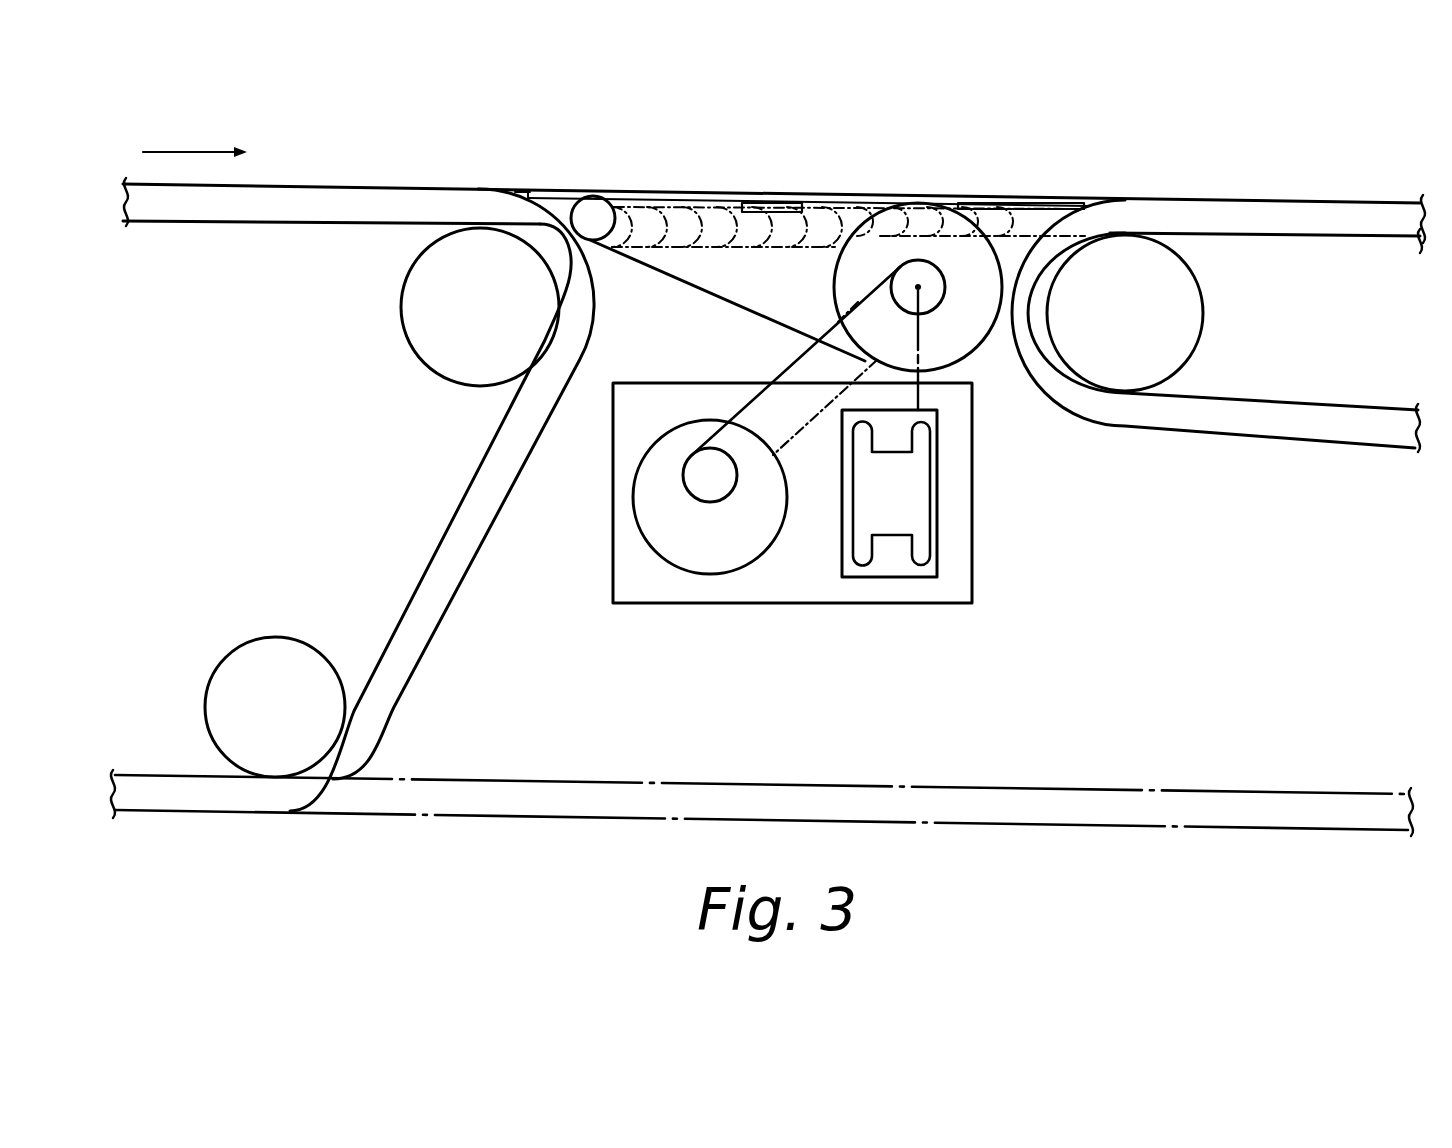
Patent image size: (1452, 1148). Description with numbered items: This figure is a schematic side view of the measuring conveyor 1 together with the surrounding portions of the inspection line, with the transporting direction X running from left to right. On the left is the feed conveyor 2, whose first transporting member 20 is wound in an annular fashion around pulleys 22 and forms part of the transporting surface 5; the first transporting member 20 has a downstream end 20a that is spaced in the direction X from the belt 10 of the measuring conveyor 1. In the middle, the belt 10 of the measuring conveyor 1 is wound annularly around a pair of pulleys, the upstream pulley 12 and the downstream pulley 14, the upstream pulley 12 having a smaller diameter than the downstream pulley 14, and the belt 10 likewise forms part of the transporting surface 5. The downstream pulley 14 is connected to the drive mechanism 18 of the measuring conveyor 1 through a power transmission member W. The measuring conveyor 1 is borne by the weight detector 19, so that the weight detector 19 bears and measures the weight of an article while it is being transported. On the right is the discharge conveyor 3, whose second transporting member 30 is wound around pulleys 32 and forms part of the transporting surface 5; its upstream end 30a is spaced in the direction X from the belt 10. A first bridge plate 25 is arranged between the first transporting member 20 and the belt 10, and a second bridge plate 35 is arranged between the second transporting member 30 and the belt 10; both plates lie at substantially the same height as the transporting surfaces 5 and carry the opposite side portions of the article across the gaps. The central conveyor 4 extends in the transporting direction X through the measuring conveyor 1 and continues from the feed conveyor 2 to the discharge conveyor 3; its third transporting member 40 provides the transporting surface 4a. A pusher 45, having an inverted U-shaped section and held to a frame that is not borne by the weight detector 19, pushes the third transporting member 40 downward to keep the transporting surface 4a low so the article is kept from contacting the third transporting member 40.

The measuring conveyor 1 is at (822, 118).
The feed conveyor 2 is at (291, 148).
The discharge conveyor 3 is at (1278, 131).
The central conveyor 4 is at (961, 147).
The transporting surface 4a is at (716, 206).
The transporting surface 5 is at (438, 190).
The belt 10 is at (683, 283).
The upstream pulley 12 is at (593, 213).
The downstream pulley 14 is at (958, 333).
The drive mechanism 18 is at (723, 548).
The weight detector 19 is at (892, 578).
The first transporting member 20 is at (342, 203).
The downstream end 20a is at (508, 207).
The pulleys 22 is at (443, 328).
The first bridge plate 25 is at (555, 194).
The second transporting member 30 is at (1270, 208).
The upstream end 30a is at (1095, 207).
The pulleys 32 is at (1180, 307).
The second bridge plate 35 is at (1025, 200).
The third transporting member 40 is at (727, 250).
The pusher 45 is at (782, 203).
The power transmission member W is at (790, 366).
The transporting direction X is at (195, 136).